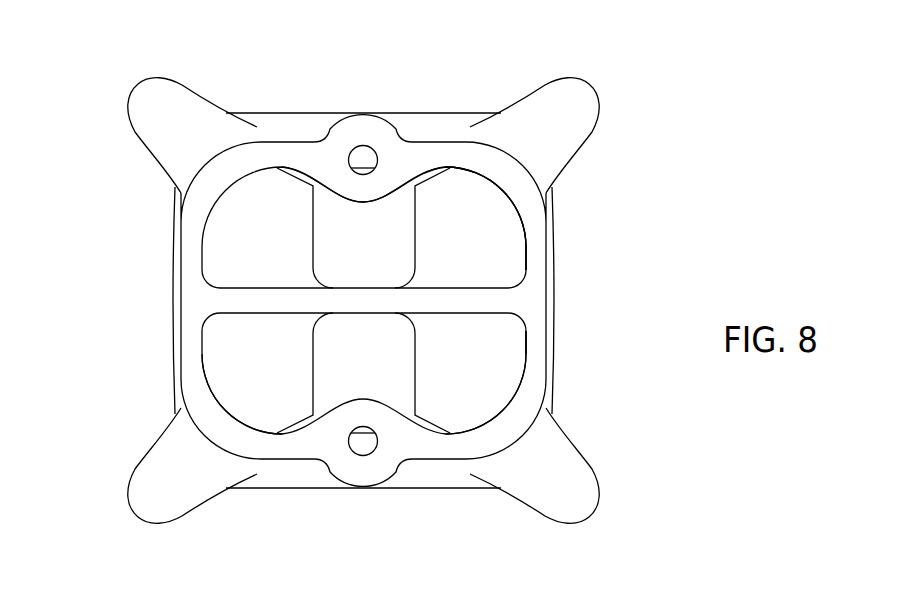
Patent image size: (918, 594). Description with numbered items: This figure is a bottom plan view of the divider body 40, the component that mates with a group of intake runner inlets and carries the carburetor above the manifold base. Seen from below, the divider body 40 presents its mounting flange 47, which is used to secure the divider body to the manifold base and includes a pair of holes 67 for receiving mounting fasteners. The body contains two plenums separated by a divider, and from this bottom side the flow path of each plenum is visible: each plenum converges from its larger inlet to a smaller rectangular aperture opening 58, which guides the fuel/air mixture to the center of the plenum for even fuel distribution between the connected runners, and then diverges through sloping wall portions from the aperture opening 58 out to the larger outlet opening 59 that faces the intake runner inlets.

The divider body 40 is at (633, 110).
The mounting flange 47 is at (295, 158).
The aperture opening 58 is at (345, 238).
The outlet opening 59 is at (478, 193).
The holes 67 is at (363, 158).